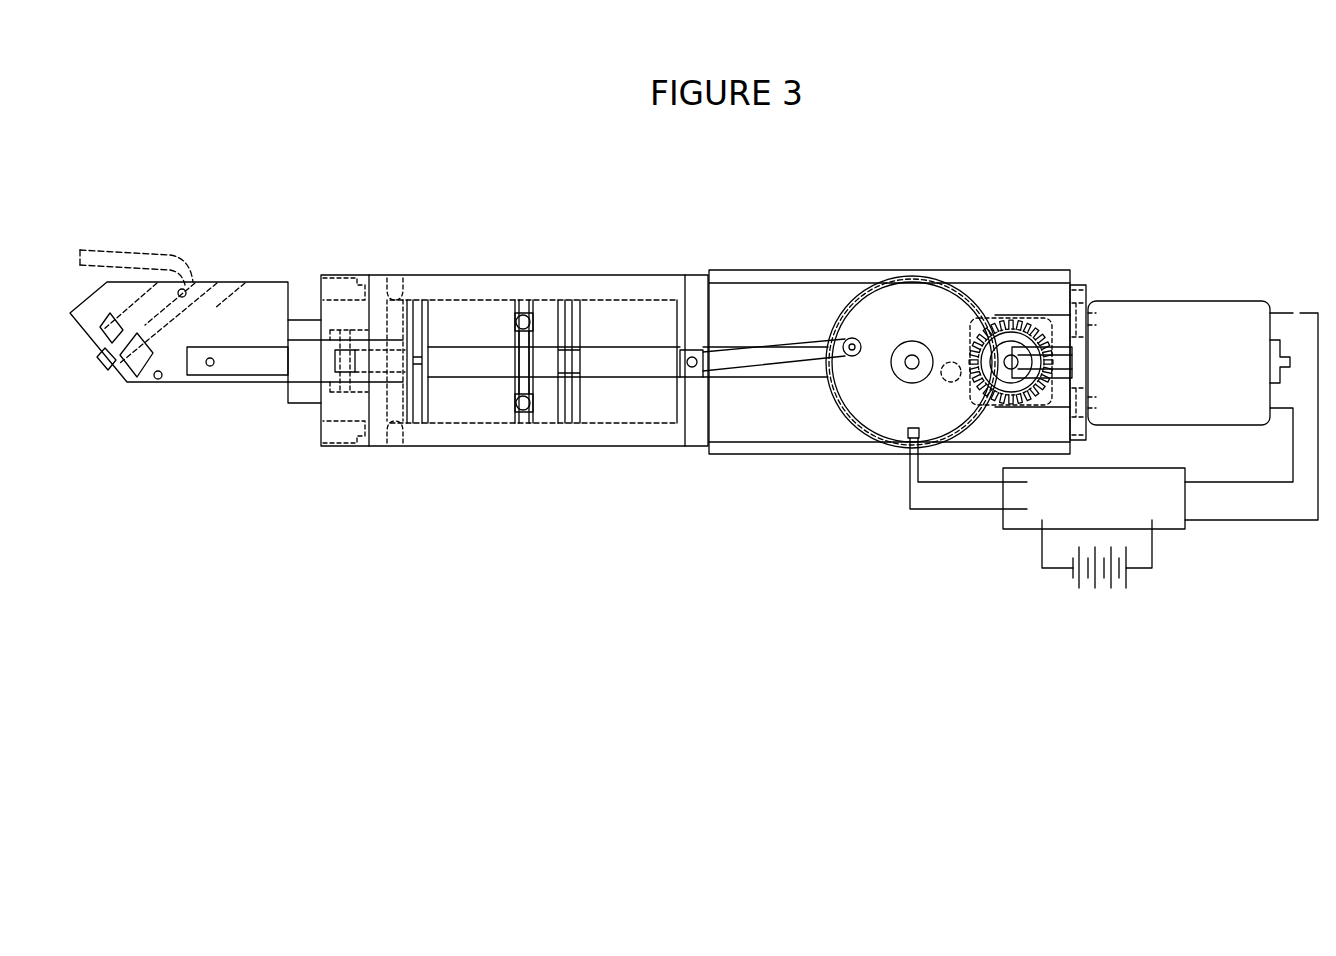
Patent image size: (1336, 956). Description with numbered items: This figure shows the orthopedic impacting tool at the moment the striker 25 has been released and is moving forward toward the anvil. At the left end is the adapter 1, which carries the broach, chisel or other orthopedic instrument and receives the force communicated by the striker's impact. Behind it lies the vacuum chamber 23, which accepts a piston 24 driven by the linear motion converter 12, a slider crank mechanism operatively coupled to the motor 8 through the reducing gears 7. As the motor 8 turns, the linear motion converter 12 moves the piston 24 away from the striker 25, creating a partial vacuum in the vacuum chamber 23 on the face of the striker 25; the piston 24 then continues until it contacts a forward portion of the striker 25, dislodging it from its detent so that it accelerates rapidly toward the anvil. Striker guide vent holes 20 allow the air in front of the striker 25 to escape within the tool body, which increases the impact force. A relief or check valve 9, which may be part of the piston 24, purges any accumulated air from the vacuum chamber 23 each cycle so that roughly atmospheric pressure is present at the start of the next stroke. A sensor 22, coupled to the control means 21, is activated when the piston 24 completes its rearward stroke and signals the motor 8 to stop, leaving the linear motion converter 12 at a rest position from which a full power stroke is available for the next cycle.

The adapter 1 is at (253, 320).
The striker guide vent holes 20 is at (395, 290).
The relief or check valve 9 is at (527, 295).
The striker 25 is at (570, 325).
The piston 24 is at (523, 367).
The vacuum chamber 23 is at (552, 397).
The linear motion converter 12 is at (850, 340).
The reducing gears 7 is at (1048, 340).
The motor 8 is at (1170, 342).
The sensor 22 is at (908, 440).
The control means 21 is at (1080, 503).